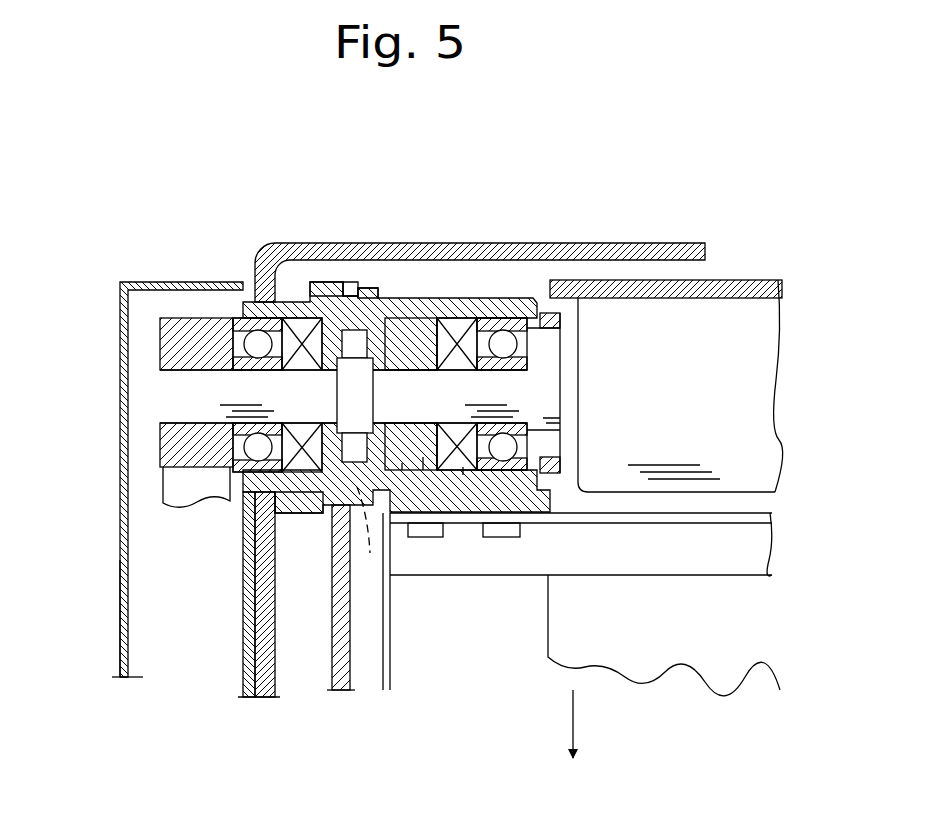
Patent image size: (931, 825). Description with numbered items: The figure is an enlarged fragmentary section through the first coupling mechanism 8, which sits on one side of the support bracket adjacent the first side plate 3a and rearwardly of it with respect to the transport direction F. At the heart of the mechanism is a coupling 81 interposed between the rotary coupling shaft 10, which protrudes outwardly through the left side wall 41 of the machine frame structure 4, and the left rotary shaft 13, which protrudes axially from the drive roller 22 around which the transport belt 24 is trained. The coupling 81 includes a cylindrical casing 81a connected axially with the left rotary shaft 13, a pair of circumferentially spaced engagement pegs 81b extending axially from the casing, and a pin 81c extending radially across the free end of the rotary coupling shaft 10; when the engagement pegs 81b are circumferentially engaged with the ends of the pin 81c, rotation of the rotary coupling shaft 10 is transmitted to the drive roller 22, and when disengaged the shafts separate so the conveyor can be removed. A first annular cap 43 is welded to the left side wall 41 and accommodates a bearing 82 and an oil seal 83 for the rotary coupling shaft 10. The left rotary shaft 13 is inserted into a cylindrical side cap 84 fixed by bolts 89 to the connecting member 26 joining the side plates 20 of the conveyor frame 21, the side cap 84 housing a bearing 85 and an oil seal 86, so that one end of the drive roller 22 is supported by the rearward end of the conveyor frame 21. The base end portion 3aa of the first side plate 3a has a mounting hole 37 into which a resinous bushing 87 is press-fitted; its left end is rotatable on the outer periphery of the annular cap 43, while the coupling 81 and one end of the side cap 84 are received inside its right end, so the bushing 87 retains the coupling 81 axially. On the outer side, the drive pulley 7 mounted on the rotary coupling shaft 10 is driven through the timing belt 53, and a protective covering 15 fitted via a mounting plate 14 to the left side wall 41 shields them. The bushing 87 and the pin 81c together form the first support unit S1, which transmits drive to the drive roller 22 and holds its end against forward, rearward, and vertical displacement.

The first side plate 3a is at (384, 689).
The base end portion 3aa is at (347, 292).
The machine frame structure 4 is at (578, 250).
The drive pulley 7 is at (168, 342).
The first coupling mechanism 8 is at (405, 290).
The rotary coupling shaft 10 is at (168, 401).
The left rotary shaft 13 is at (452, 389).
The mounting plate 14 is at (247, 659).
The protective covering 15 is at (124, 607).
The side plate 20 is at (391, 635).
The conveyor frame 21 is at (593, 586).
The drive roller 22 is at (758, 362).
The transport belt 24 is at (747, 290).
The connecting member 26 is at (683, 566).
The mounting hole 37 is at (320, 496).
The left side wall 41 is at (267, 609).
The first annular cap 43 is at (320, 296).
The timing belt 53 is at (188, 315).
The coupling 81 is at (424, 306).
The cylindrical casing 81a is at (423, 460).
The engagement pegs 81b is at (402, 466).
The pin 81c is at (365, 534).
The bearing 82 is at (240, 328).
The oil seal 83 is at (262, 300).
The side cap 84 is at (506, 316).
The bearing 85 is at (508, 520).
The oil seal 86 is at (463, 469).
The bushing 87 is at (364, 296).
The bolts 89 is at (520, 532).
The first support unit S1 is at (353, 286).
The transport direction F is at (585, 722).